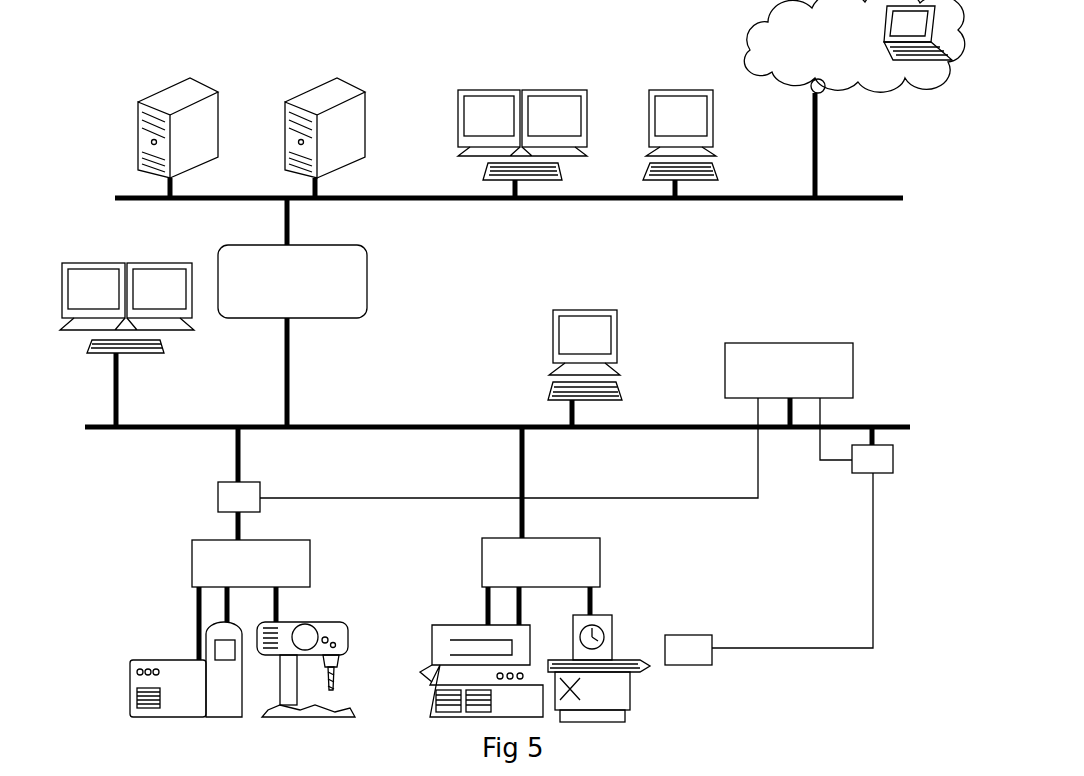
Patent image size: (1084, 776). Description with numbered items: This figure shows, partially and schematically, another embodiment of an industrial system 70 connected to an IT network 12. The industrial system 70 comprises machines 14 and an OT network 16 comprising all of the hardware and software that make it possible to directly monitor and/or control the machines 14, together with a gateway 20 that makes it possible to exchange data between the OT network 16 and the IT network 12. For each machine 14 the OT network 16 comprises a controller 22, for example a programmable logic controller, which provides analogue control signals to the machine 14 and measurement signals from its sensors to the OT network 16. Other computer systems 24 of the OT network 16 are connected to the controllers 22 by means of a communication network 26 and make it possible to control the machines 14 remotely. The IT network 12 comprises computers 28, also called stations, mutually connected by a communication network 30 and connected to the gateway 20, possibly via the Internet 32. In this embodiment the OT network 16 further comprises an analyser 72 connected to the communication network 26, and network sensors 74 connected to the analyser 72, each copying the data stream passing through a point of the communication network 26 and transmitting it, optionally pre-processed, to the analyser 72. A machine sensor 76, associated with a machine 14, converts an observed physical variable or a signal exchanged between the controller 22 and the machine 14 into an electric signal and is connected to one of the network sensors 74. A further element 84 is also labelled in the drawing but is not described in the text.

The manufacturing system 12 is at (577, 53).
The machine / production equipment 14 is at (318, 622).
The machine control network 16 is at (728, 548).
The data collection server 20 is at (325, 320).
The machine controller 22 is at (290, 540).
The workstation 24 is at (102, 262).
The control network bus 26 is at (430, 416).
The enterprise computer / server 28 is at (140, 112).
The enterprise network bus 30 is at (427, 197).
The internet cloud with remote computer 32 is at (900, 75).
The production line cell 70 is at (130, 566).
The programmable logic controller 72 is at (830, 343).
The network interface module 74 is at (218, 497).
The sensor / I/O device 76 is at (700, 635).
The network connection 84 is at (348, 773).